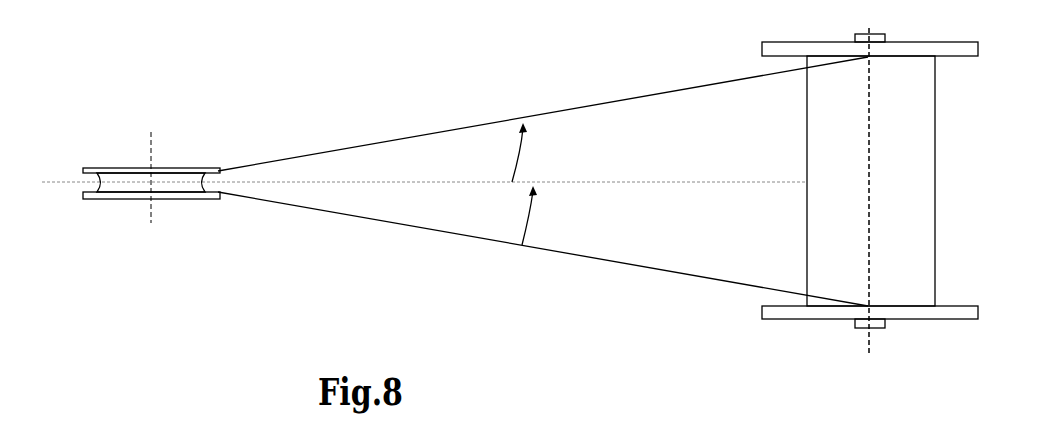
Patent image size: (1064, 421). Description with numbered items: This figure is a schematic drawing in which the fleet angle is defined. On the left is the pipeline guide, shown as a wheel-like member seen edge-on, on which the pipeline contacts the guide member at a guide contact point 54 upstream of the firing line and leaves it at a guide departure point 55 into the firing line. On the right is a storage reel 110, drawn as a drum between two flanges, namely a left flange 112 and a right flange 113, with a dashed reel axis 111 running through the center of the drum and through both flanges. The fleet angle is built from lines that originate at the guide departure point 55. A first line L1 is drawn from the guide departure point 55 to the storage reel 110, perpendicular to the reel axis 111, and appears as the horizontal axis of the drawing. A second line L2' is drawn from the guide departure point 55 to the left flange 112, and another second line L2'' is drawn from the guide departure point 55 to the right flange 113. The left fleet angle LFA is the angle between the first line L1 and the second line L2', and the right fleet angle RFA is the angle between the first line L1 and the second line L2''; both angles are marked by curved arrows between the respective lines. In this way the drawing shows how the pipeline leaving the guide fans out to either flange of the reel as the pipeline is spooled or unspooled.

The guide contact point 54 is at (234, 156).
The guide departure point 55 is at (96, 183).
The storage reel 110 is at (871, 181).
The reel axis 111 is at (872, 243).
The left flange 112 is at (983, 306).
The right flange 113 is at (967, 58).
The first line L1 is at (687, 180).
The second line L2' is at (543, 254).
The second line L2'' is at (543, 114).
The right fleet angle RFA is at (552, 152).
The left fleet angle LFA is at (558, 215).